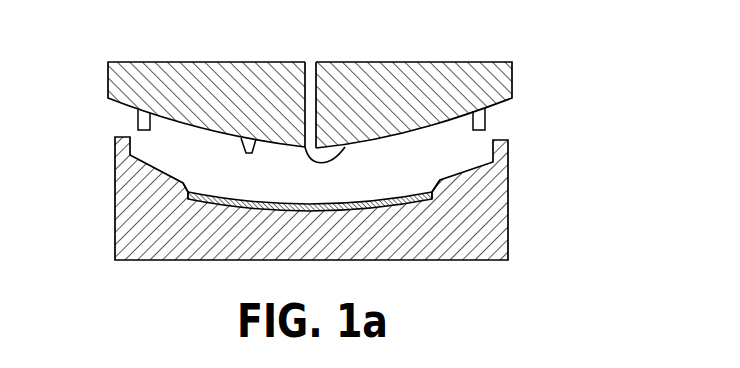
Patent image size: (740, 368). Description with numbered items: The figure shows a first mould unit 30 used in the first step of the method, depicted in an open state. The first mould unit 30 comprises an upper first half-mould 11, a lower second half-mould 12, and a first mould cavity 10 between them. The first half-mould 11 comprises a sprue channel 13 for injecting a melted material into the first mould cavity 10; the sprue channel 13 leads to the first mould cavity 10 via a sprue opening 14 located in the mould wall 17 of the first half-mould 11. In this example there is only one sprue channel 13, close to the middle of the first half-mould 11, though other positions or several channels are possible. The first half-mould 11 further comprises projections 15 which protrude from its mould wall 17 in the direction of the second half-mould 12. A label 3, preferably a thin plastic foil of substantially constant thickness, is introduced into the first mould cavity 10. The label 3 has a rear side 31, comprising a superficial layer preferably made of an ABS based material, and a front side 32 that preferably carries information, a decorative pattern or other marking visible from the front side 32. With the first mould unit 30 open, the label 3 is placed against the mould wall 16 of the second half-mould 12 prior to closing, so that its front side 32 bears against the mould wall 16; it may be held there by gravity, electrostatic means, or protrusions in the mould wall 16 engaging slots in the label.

The label 3 is at (388, 206).
The first mould cavity 10 is at (311, 223).
The first half-mould 11 is at (205, 90).
The second half-mould 12 is at (135, 226).
The sprue channel 13 is at (313, 88).
The sprue opening 14 is at (342, 158).
The projections 15 is at (140, 118).
The mould wall 16 is at (215, 203).
The mould wall 17 is at (253, 143).
The first mould unit 30 is at (594, 137).
The rear side 31 is at (411, 193).
The front side 32 is at (411, 193).